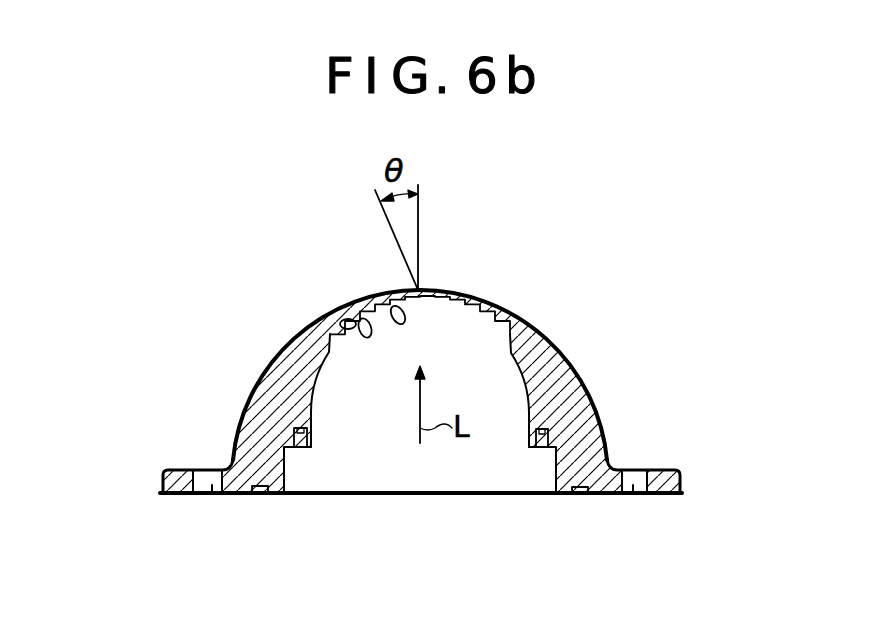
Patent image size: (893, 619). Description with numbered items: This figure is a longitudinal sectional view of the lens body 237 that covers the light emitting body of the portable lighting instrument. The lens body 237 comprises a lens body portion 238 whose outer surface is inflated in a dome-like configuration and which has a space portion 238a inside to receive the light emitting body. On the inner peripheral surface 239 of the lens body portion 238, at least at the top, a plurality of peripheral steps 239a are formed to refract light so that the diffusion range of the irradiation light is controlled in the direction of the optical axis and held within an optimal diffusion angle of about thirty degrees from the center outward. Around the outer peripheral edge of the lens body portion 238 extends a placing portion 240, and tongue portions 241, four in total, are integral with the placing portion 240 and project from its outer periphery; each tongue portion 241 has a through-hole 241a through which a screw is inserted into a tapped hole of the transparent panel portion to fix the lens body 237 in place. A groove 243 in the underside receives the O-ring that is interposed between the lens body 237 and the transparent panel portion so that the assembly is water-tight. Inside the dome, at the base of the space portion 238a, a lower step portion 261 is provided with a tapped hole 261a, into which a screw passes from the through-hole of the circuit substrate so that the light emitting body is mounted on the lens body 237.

The lens body 237 is at (290, 337).
The lens body portion 238 is at (498, 306).
The space portion 238a is at (397, 434).
The inner peripheral surface 239 is at (525, 388).
The peripheral steps 239a is at (393, 306).
The placing portion 240 is at (230, 466).
The tongue portion 241 is at (174, 470).
The through-hole 241a is at (211, 490).
The groove 243 is at (258, 495).
The lower step portion 261 is at (300, 495).
The tapped hole 261a is at (298, 450).